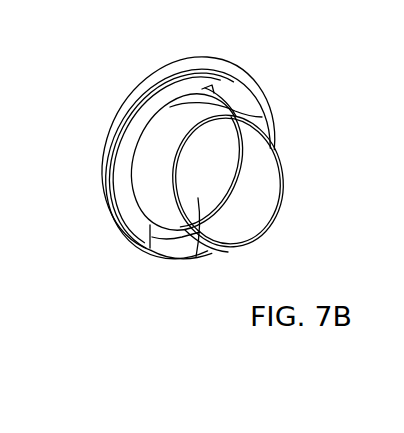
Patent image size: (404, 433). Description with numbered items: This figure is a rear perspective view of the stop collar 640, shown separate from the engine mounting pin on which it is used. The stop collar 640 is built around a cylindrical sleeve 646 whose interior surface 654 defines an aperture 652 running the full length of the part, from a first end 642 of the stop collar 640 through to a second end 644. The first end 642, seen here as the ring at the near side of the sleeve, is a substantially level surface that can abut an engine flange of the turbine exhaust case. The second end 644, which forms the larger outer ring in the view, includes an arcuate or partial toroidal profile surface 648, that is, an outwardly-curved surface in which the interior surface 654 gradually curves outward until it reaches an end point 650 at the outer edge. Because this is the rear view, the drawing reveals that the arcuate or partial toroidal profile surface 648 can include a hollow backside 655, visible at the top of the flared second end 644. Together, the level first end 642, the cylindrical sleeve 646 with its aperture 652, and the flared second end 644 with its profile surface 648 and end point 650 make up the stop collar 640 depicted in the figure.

The stop collar 640 is at (264, 88).
The first end 642 is at (287, 192).
The second end 644 is at (112, 110).
The cylindrical sleeve 646 is at (262, 117).
The arcuate or partial toroidal profile surface 648 is at (128, 96).
The end point 650 is at (142, 256).
The aperture 652 is at (196, 257).
The interior surface 654 is at (238, 231).
The hollow backside 655 is at (211, 86).